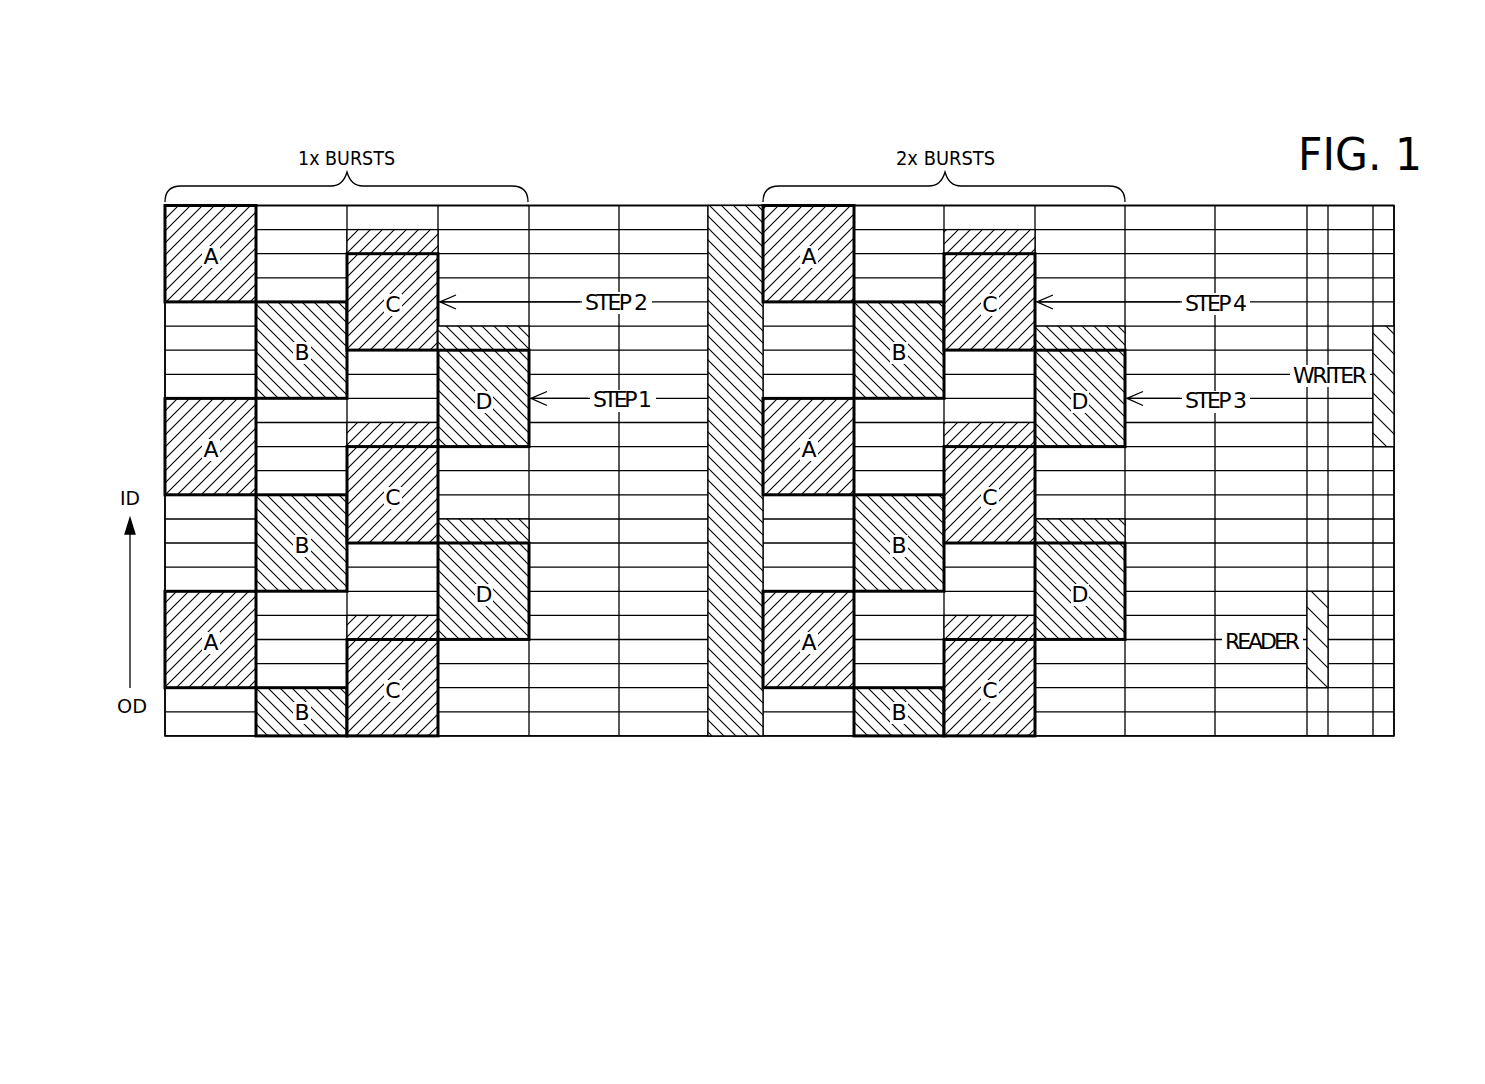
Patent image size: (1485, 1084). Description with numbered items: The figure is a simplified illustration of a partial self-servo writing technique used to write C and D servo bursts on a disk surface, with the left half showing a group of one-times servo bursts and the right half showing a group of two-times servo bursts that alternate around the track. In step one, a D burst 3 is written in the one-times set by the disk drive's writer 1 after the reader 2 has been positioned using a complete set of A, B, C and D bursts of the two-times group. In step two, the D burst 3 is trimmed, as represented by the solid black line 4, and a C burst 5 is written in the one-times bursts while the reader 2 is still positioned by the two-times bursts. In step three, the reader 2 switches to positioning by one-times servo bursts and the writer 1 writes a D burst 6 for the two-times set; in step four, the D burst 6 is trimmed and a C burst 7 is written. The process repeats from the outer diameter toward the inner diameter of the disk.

The writer 1 is at (1395, 371).
The reader 2 is at (1329, 628).
The D burst 3 is at (531, 369).
The trim line 4 is at (498, 349).
The C burst 5 is at (440, 267).
The D burst 6 is at (1127, 371).
The C burst 7 is at (1037, 267).